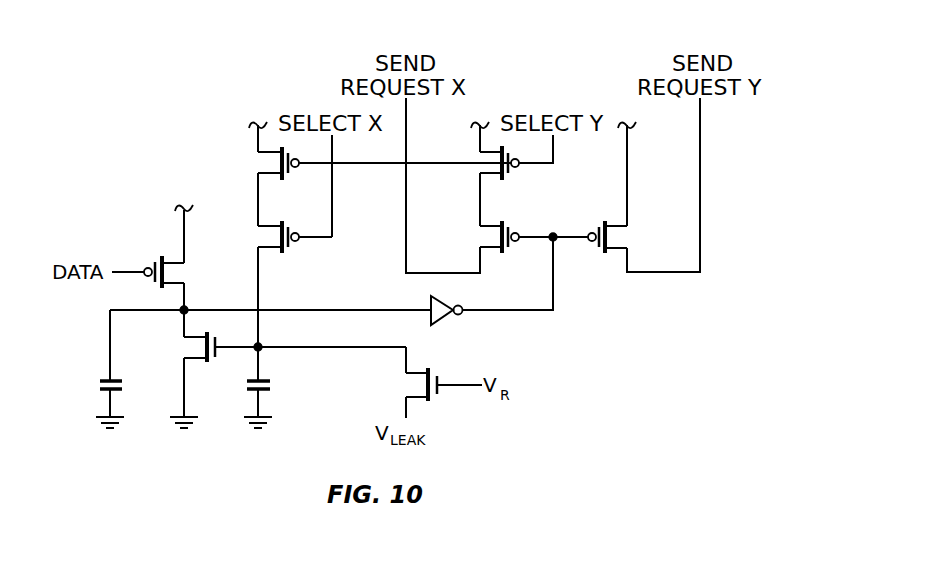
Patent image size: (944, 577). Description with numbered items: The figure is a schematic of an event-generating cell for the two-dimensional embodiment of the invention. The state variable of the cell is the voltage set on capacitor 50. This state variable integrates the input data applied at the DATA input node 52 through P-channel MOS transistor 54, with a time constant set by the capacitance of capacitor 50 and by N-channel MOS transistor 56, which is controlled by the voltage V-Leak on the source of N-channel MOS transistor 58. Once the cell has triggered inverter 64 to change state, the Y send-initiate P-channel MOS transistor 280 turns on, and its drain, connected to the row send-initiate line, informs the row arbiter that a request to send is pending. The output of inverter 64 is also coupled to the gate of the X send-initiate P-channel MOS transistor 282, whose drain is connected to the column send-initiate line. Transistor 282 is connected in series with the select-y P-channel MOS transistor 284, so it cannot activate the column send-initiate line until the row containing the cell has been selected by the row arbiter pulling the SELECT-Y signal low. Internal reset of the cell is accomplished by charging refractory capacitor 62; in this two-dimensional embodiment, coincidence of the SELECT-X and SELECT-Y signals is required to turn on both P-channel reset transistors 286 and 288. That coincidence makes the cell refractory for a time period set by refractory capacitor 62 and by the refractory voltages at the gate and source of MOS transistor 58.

The capacitor 50 is at (96, 385).
The DATA input node 52 is at (127, 270).
The P-channel MOS transistor 54 is at (180, 272).
The N-channel MOS transistor 56 is at (190, 348).
The N-channel MOS transistor 58 is at (412, 387).
The refractory capacitor 62 is at (272, 384).
The inverter 64 is at (442, 322).
The Y send-initiate P-channel MOS transistor 280 is at (620, 238).
The X send-initiate P-channel MOS transistor 282 is at (483, 237).
The select-y P-channel MOS transistor 284 is at (478, 157).
The P-channel reset transistor 286 is at (262, 163).
The P-channel reset transistor 288 is at (262, 237).